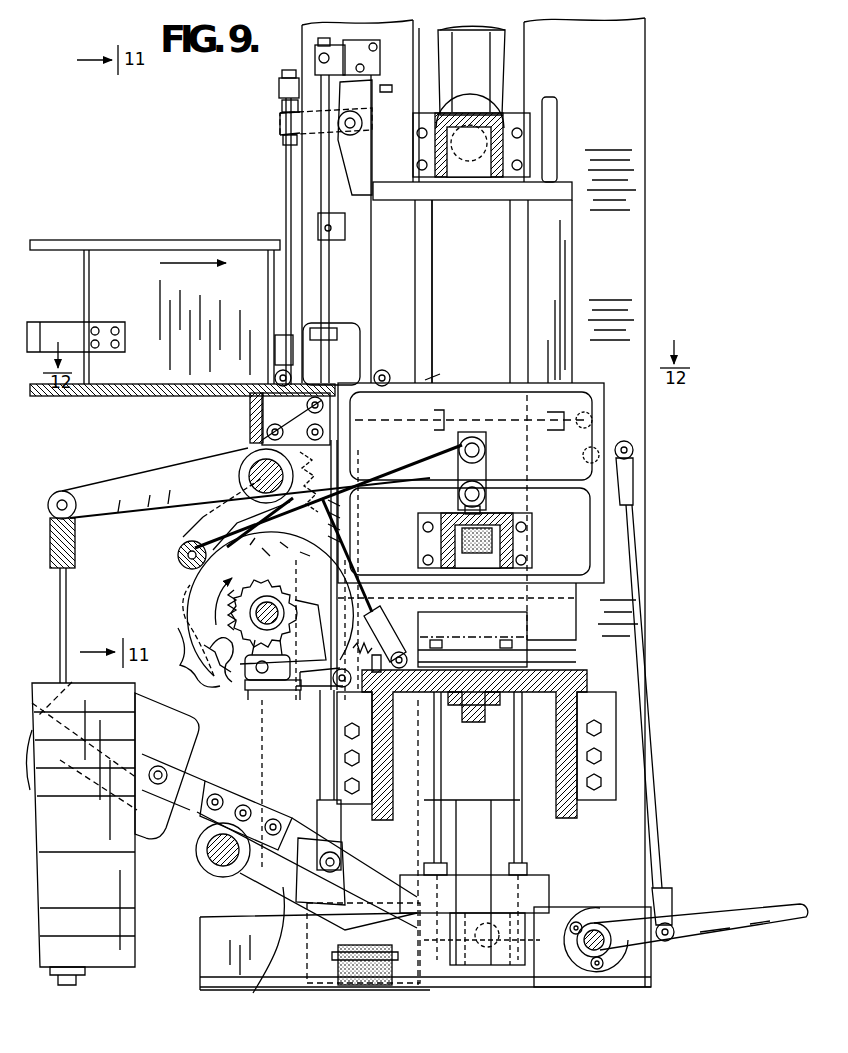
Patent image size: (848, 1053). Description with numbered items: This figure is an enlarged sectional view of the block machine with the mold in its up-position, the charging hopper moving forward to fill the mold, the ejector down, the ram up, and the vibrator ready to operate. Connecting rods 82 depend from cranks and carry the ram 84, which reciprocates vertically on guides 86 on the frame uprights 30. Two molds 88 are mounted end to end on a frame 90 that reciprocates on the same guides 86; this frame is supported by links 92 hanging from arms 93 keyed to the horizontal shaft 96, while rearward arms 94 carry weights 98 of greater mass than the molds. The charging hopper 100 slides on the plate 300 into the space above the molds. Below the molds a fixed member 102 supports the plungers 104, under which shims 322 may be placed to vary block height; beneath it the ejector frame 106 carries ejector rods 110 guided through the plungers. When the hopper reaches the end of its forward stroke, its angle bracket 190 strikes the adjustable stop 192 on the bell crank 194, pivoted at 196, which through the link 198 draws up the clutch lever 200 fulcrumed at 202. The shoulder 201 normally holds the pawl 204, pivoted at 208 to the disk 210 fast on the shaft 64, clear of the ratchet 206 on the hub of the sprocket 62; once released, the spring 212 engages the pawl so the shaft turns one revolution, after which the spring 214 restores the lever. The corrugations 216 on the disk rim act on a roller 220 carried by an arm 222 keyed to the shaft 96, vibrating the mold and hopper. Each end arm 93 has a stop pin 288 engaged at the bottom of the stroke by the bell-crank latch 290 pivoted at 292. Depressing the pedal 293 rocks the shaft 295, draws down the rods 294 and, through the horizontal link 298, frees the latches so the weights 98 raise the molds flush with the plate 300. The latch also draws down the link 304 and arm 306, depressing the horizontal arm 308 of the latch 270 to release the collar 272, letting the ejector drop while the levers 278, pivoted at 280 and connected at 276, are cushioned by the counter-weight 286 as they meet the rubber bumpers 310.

The frame uprights 30 is at (306, 66).
The sprocket 62 is at (182, 621).
The shaft 64 is at (265, 605).
The connecting rod 82 is at (478, 48).
The ram 84 is at (535, 140).
The guides 86 is at (513, 256).
The molds 88 is at (571, 540).
The frame 90 is at (505, 522).
The links 92 is at (476, 470).
The arms 93 is at (328, 492).
The arms 94 is at (135, 495).
The horizontal shaft 96 is at (250, 474).
The weights 98 is at (110, 919).
The charging hopper 100 is at (100, 267).
The fixed member 102 is at (575, 760).
The plungers 104 is at (437, 622).
The ejector frame 106 is at (500, 888).
The ejector rods 110 is at (512, 775).
The angle bracket 190 is at (45, 338).
The adjustable stop 192 is at (312, 332).
The bell crank 194 is at (300, 359).
The pivot 196 is at (278, 410).
The link 198 is at (343, 545).
The clutch lever 200 is at (304, 728).
The shoulder 201 is at (298, 700).
The fulcrum 202 is at (348, 690).
The pawl 204 is at (248, 685).
The ratchet 206 is at (296, 631).
The pivot 208 is at (250, 700).
The disk 210 is at (212, 665).
The spring 212 is at (225, 612).
The spring 214 is at (262, 445).
The corrugations 216 is at (206, 650).
The roller 220 is at (178, 556).
The arm 222 is at (200, 530).
The latch 270 is at (325, 188).
The collar 272 is at (342, 227).
The connection 276 is at (342, 862).
The levers 278 is at (283, 890).
The pivot 280 is at (206, 856).
The counter-weight 286 is at (189, 766).
The stop pin 288 is at (344, 570).
The bell-crank latch 290 is at (422, 378).
The pivot 292 is at (385, 373).
The pedal 293 is at (760, 912).
The rods 294 is at (632, 586).
The shaft 295 is at (590, 950).
The horizontal link 298 is at (503, 418).
The plate 300 is at (106, 396).
The link 304 is at (288, 233).
The arm 306 is at (285, 97).
The horizontal arm 308 is at (283, 120).
The rubber bumpers 310 is at (368, 958).
The shims 322 is at (528, 664).